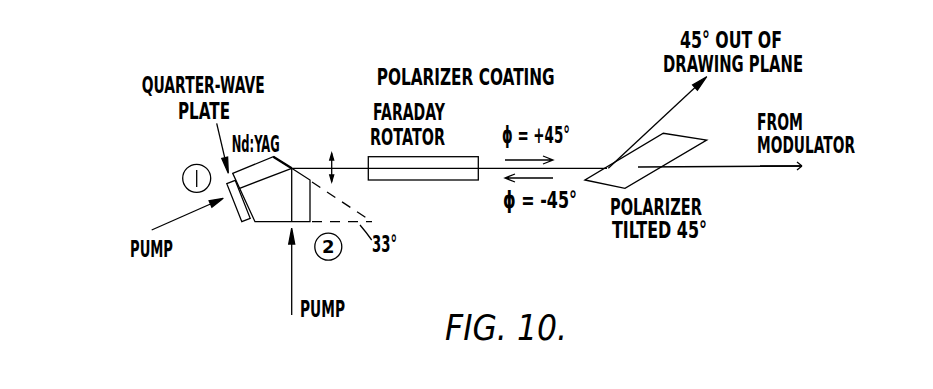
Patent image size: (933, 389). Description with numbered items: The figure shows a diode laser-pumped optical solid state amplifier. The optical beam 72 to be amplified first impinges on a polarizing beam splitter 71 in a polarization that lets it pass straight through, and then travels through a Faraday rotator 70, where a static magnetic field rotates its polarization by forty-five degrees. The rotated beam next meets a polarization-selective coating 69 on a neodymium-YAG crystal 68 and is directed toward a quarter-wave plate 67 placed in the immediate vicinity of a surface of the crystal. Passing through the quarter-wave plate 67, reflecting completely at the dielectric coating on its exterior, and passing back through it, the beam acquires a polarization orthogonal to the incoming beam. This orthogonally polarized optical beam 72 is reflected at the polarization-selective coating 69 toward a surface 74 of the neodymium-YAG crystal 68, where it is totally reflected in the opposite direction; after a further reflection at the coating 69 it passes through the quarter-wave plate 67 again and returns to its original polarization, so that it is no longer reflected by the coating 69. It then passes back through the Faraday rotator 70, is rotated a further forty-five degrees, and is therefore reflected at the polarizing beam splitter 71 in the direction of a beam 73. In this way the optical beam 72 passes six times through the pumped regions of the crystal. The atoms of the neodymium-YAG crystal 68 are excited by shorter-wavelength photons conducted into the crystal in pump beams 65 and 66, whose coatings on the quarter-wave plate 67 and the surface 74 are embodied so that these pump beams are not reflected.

The pump beam 65 is at (292, 281).
The pump beam 66 is at (157, 223).
The quarter-wave plate 67 is at (220, 192).
The neodymium-YAG crystal 68 is at (270, 168).
The polarization-selective coating 69 is at (298, 150).
The Faraday rotator 70 is at (417, 176).
The polarizing beam splitter 71 is at (685, 138).
The optical beam 72 is at (802, 166).
The beam 73 is at (673, 117).
The surface 74 is at (273, 217).